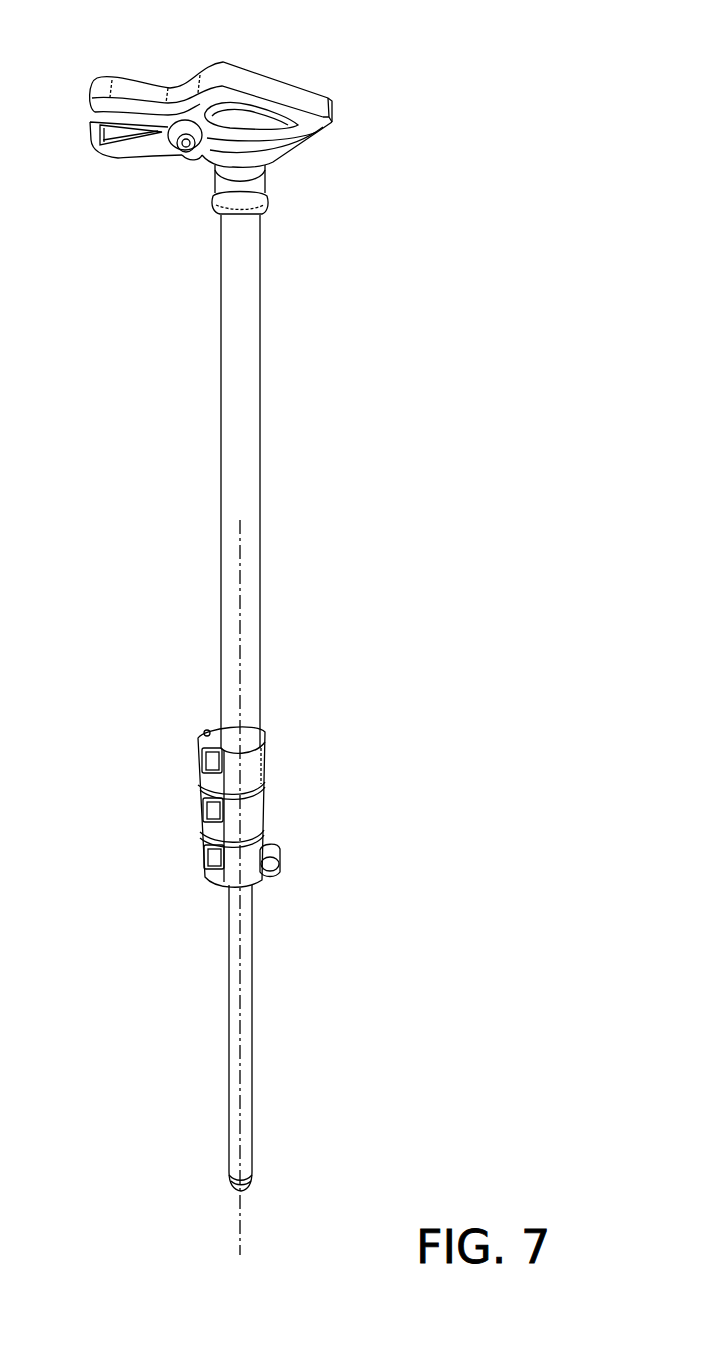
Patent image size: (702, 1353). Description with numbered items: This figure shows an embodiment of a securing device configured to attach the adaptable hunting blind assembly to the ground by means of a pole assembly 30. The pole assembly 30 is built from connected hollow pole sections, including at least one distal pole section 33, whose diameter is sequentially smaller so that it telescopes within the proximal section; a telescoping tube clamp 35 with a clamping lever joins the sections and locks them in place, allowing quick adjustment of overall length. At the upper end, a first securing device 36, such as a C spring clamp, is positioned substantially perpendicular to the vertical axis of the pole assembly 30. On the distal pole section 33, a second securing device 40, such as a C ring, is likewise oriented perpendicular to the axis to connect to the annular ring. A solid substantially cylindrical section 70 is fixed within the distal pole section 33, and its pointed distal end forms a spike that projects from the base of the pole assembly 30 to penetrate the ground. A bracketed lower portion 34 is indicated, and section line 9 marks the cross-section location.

The distal pole section 33 is at (248, 114).
The first securing device 36 is at (211, 114).
The pole assembly 30 is at (308, 1195).
The telescoping tube clamp 35 is at (223, 858).
The second securing device 40 is at (270, 845).
The lower portion 34 is at (148, 1010).
The solid substantially cylindrical section 70 is at (196, 1038).
The section line 9- 9 is at (234, 525).